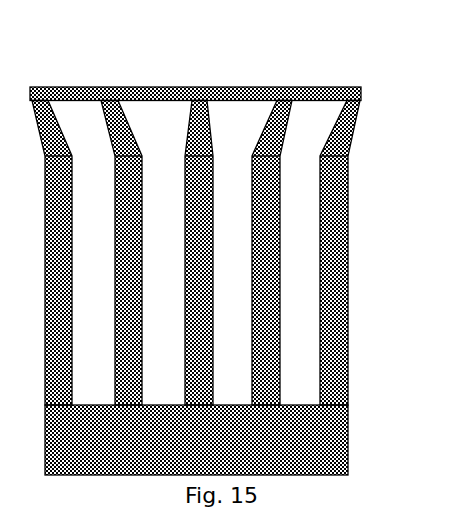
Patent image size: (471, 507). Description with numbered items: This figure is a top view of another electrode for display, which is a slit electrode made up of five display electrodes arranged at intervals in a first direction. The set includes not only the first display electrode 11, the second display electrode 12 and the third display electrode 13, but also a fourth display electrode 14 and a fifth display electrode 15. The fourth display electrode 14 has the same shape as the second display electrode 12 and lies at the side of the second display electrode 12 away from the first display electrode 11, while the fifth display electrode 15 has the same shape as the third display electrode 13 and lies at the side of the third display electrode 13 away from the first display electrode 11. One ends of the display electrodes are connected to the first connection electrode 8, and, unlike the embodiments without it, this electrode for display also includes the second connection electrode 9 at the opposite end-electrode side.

The first connection electrode 8 is at (337, 440).
The second connection electrode 9 is at (362, 93).
The first display electrode 11 is at (199, 128).
The second display electrode 12 is at (281, 128).
The third display electrode 13 is at (113, 128).
The fourth display electrode 14 is at (350, 128).
The fifth display electrode 15 is at (44, 128).